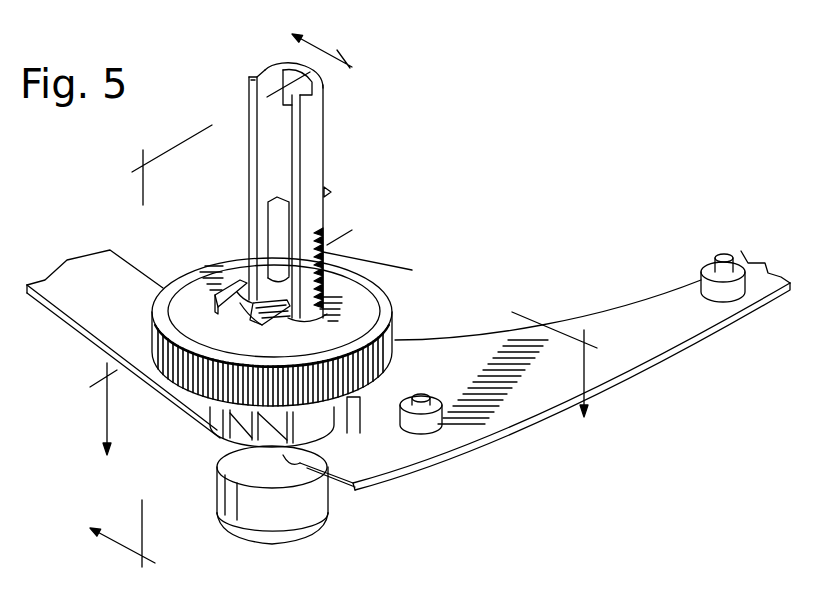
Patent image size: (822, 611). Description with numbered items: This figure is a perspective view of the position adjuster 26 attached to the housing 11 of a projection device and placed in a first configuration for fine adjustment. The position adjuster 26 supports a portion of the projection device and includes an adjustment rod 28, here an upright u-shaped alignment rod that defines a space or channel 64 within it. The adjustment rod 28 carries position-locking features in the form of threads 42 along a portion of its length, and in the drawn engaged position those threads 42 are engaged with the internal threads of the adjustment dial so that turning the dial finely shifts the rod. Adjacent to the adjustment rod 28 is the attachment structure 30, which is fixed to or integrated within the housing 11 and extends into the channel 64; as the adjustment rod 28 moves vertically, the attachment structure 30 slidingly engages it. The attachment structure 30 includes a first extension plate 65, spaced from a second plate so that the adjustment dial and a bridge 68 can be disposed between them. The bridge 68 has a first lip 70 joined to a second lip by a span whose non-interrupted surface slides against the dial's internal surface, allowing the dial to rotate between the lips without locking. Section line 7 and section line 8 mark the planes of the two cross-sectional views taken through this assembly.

The housing 11 is at (680, 348).
The position adjuster 26 is at (418, 165).
The adjustment rod 28 is at (298, 184).
The attachment structure 30 is at (258, 325).
The threads 42 is at (318, 232).
The channel 64 is at (267, 83).
The first extension plate 65 is at (250, 292).
The bridge 68 is at (240, 333).
The first lip 70 is at (223, 320).
The section line 7- 7 is at (343, 397).
The section line 8- 8 is at (242, 291).